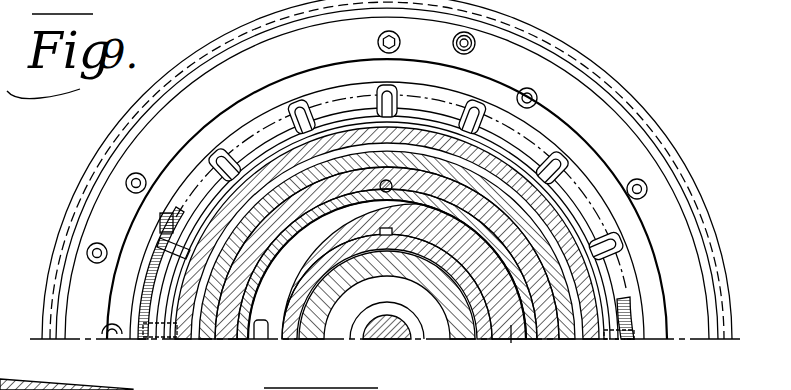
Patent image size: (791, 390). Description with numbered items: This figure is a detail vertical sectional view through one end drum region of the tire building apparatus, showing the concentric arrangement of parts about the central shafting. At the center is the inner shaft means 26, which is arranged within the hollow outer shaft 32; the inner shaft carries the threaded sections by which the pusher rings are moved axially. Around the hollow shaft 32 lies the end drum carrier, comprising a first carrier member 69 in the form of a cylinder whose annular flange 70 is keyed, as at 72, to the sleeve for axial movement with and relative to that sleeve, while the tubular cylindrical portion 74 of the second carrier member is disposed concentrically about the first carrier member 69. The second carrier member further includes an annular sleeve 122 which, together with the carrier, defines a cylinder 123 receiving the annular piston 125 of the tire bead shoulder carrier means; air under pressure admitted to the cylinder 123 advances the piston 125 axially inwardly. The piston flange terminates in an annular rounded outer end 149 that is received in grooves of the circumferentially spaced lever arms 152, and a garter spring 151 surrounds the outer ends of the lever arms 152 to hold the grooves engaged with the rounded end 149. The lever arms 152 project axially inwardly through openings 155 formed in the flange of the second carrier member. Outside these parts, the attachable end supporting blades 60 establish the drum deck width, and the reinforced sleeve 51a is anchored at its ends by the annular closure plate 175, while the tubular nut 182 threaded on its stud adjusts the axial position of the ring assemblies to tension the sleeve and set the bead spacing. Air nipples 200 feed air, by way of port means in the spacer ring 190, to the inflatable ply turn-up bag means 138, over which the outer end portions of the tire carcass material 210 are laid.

The inner shaft means 26 is at (395, 340).
The hollow outer shaft 32 is at (458, 305).
The sleeve 51a is at (157, 357).
The end supporting members or blades 60 is at (449, 257).
The first carrier member 69 is at (261, 341).
The annular flange of first carrier member 70 is at (511, 343).
The key 72 is at (393, 230).
The tubular cylindrical portion 74 is at (300, 236).
The annular sleeve 122 is at (213, 187).
The cylinder 123 is at (344, 206).
The annular piston 125 is at (210, 298).
The inflatable ply turn-up bag means 138 is at (584, 63).
The annular rounded outer end 149 is at (336, 115).
The garter spring 151 is at (163, 250).
The lever arms 152 is at (221, 148).
The openings 155 is at (468, 106).
The annular closure plate 175 is at (378, 388).
The threaded adjusting sleeve member or tubular nut 182 is at (538, 101).
The spacer ring 190 is at (523, 383).
The air nipples 200 is at (475, 50).
The tire carcass material 210 is at (645, 103).